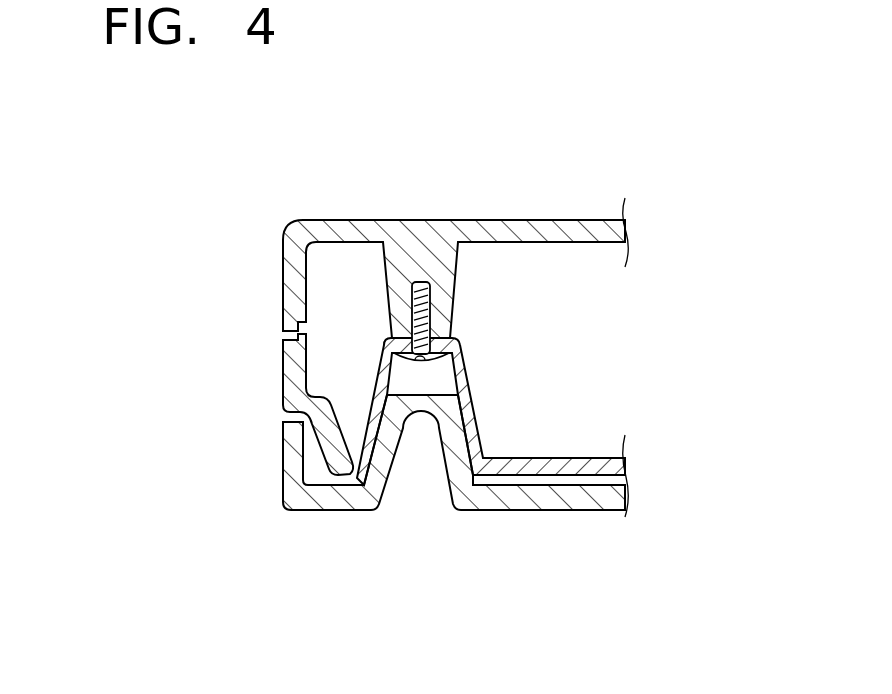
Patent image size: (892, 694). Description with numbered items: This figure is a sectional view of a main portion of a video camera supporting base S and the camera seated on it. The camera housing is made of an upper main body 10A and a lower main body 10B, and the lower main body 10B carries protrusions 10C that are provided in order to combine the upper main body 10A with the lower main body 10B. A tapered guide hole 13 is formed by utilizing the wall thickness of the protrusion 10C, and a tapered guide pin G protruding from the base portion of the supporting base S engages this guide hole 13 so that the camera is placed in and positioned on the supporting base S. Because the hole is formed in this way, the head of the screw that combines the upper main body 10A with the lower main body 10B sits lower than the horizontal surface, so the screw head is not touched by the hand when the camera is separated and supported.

The upper main body 10A is at (283, 253).
The lower main body 10B is at (283, 368).
The protrusion 10C is at (470, 398).
The tapered guide hole 13 is at (431, 378).
The supporting base S is at (287, 470).
The tapered guide pin G is at (445, 446).